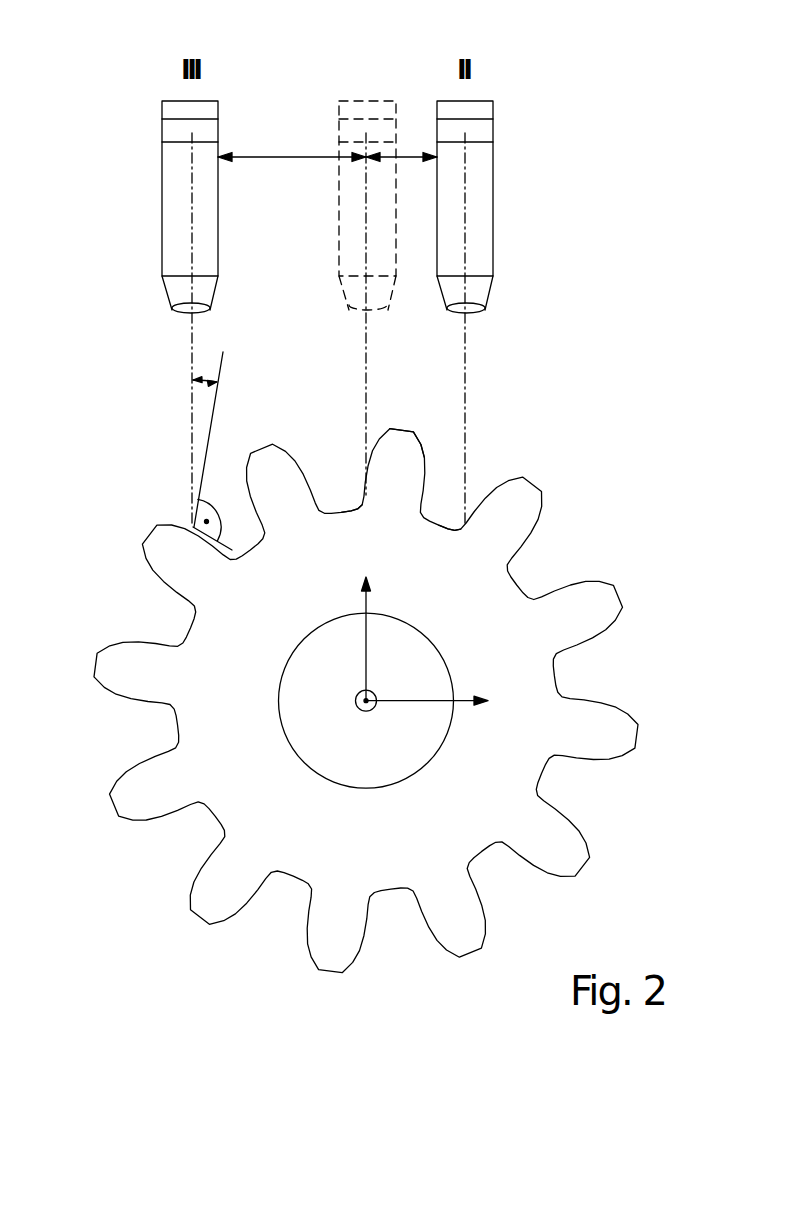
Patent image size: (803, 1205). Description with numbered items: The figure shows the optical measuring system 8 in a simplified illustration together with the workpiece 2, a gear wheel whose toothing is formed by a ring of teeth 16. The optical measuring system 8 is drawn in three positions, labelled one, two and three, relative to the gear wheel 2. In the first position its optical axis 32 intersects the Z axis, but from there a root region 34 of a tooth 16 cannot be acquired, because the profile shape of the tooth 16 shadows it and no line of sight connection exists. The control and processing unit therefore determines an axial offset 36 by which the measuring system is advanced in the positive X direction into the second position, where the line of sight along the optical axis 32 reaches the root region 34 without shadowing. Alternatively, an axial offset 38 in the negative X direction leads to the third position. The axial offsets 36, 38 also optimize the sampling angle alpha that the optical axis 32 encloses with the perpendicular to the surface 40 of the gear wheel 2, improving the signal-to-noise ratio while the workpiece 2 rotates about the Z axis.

The workpiece 2 is at (130, 448).
The optical measuring system 8 is at (358, 100).
The tooth 16 is at (411, 489).
The optical axis 32 is at (367, 377).
The root region 34 is at (352, 493).
The axial offset 36 is at (408, 157).
The axial offset 38 is at (275, 157).
The surface 40 is at (177, 527).